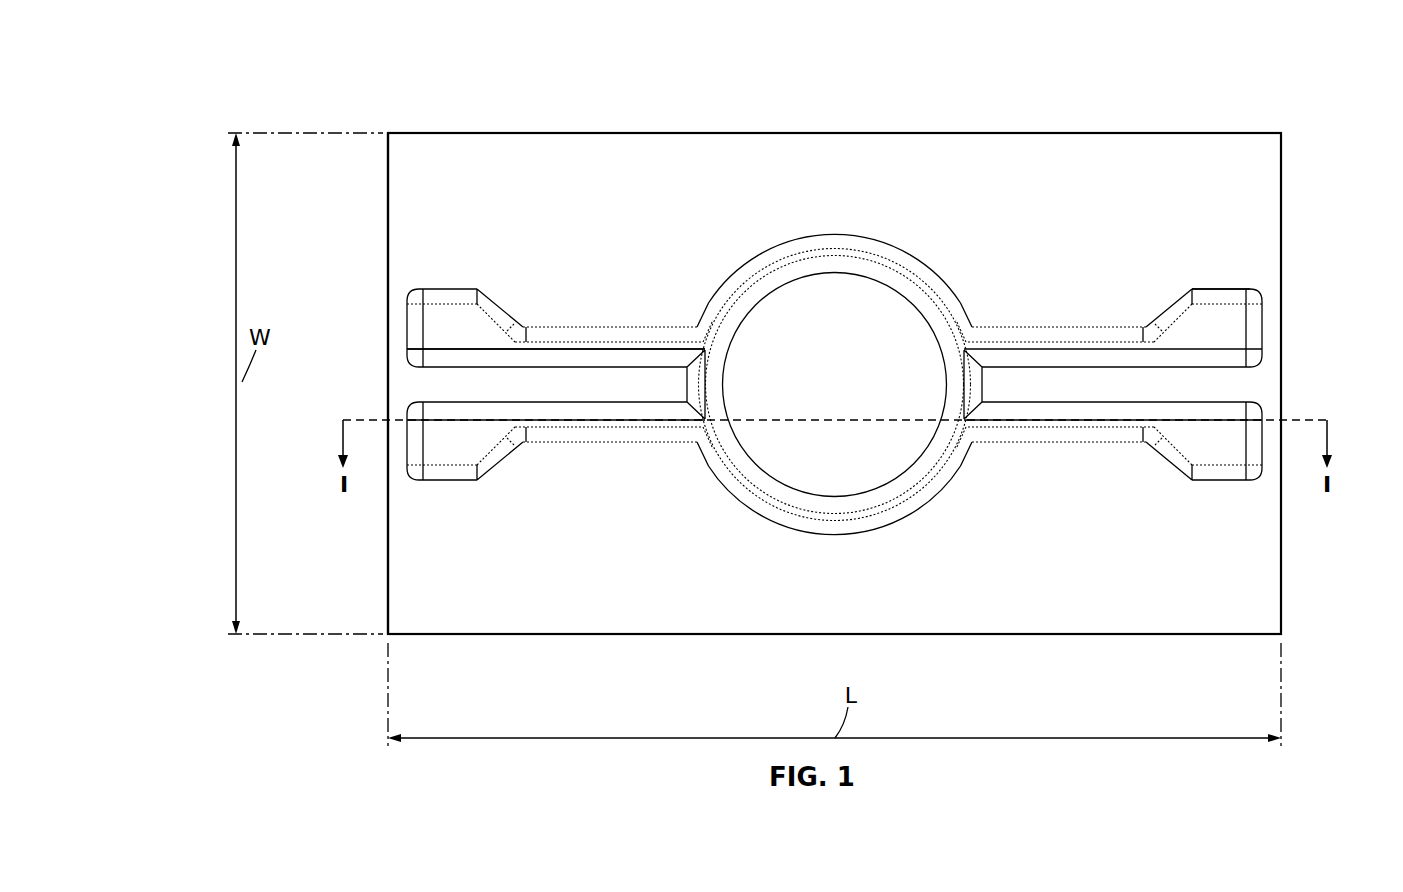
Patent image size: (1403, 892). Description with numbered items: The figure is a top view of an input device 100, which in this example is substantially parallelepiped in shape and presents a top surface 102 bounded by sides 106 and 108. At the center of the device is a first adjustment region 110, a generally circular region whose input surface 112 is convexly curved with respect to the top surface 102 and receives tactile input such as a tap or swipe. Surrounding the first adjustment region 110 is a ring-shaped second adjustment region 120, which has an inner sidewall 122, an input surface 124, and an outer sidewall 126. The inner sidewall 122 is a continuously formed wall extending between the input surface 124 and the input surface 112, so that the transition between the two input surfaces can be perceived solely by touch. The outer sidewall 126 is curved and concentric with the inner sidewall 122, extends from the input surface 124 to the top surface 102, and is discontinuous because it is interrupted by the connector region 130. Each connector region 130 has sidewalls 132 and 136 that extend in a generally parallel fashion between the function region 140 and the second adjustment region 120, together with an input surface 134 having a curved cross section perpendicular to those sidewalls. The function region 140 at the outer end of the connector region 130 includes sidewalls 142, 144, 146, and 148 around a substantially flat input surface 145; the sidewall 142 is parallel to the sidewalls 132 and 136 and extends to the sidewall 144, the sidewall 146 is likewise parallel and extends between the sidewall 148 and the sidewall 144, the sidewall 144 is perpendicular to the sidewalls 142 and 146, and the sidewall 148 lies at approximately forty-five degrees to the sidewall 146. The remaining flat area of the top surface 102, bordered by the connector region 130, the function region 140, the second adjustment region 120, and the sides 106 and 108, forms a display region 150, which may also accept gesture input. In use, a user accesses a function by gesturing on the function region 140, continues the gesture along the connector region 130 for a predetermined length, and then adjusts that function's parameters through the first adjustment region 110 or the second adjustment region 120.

The input device 100 is at (382, 38).
The top surface 102 is at (432, 158).
The side 106 is at (383, 567).
The side 108 is at (552, 131).
The first adjustment region 110 is at (865, 322).
The input surface 112 is at (902, 352).
The second adjustment region 120 is at (812, 248).
The inner sidewall 122 is at (898, 482).
The input surface 124 is at (888, 510).
The outer sidewall 126 is at (835, 523).
The connector region 130 is at (585, 347).
The sidewall 132 is at (683, 327).
The input surface 134 is at (572, 357).
The sidewall 136 is at (655, 366).
The function region 140 is at (437, 335).
The sidewall 142 is at (1202, 368).
The sidewall 144 is at (1268, 330).
The input surface 145 is at (1210, 322).
The sidewall 146 is at (1220, 302).
The sidewall 148 is at (1175, 320).
The display region 150 is at (606, 203).